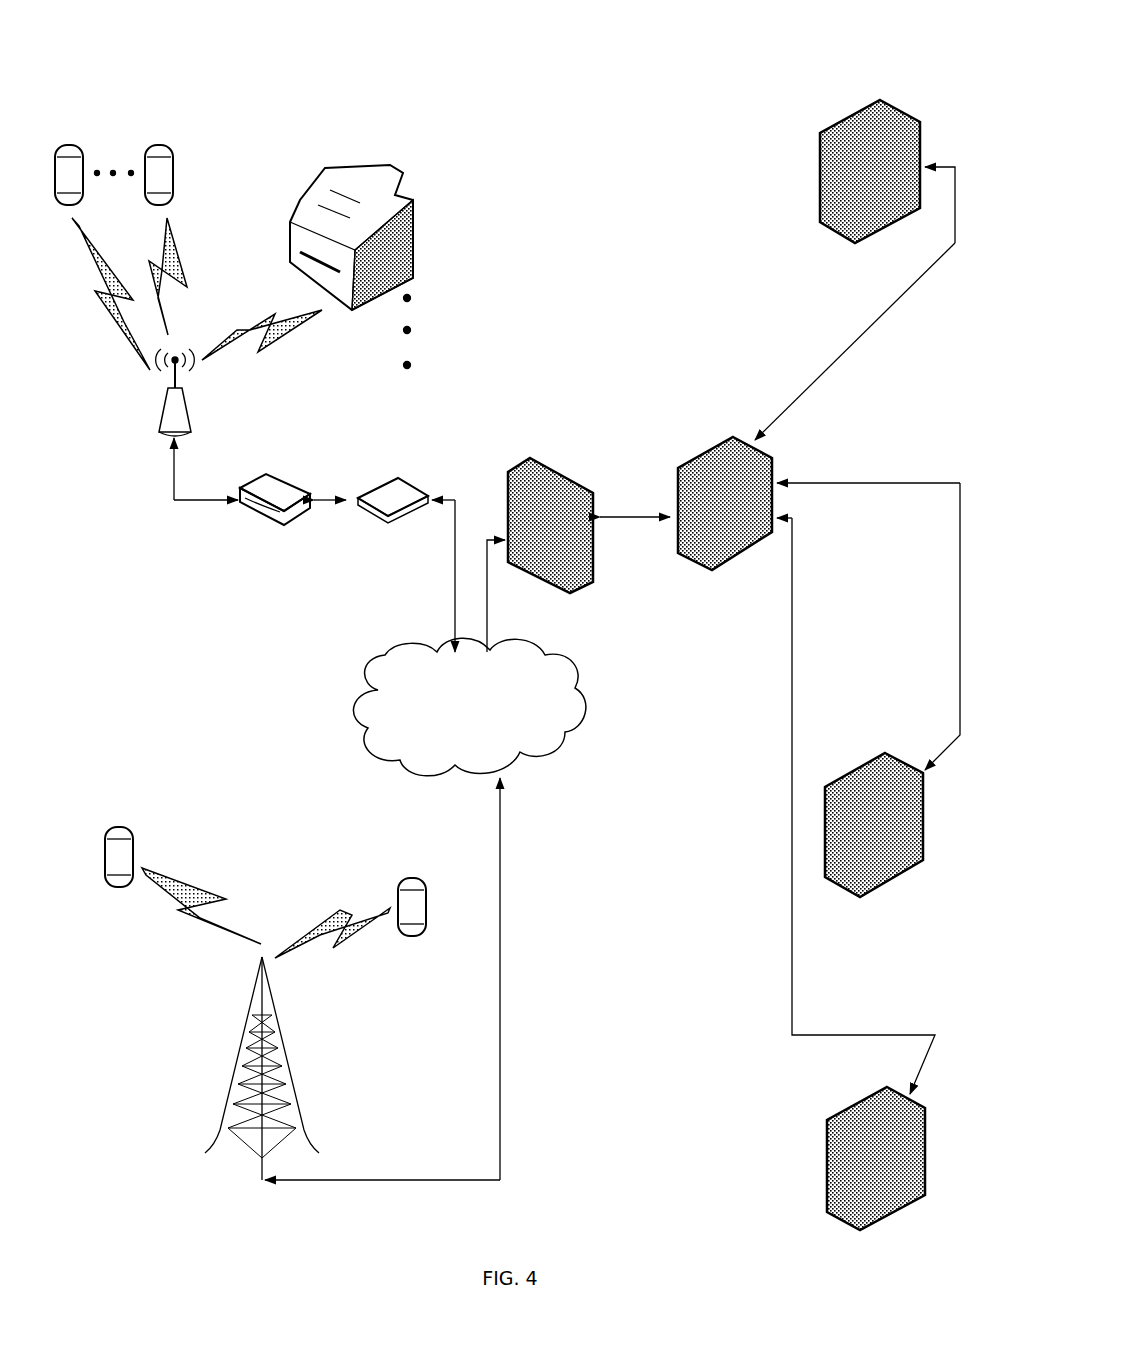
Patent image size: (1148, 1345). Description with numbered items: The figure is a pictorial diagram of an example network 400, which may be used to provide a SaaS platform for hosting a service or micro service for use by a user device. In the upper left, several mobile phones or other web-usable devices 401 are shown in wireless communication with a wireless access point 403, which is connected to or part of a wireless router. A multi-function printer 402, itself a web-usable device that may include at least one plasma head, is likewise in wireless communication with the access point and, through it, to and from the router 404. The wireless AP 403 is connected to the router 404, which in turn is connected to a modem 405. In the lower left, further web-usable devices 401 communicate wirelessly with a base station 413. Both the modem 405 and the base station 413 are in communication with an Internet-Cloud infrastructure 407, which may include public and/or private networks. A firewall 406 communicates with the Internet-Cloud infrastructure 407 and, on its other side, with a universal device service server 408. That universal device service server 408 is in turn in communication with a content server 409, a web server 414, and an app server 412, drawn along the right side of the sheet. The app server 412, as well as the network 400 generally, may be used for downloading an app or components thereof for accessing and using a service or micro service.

The network 400 is at (188, 58).
The web-usable devices 401 is at (408, 878).
The multi-function printer 402 is at (418, 210).
The wireless access point 403 is at (188, 393).
The router 404 is at (255, 515).
The modem 405 is at (388, 522).
The firewall 406 is at (552, 462).
The Internet-Cloud infrastructure 407 is at (469, 909).
The universal device service server 408 is at (734, 438).
The content server 409 is at (818, 141).
The app server 412 is at (826, 1118).
The base station 413 is at (283, 1079).
The web server 414 is at (882, 752).